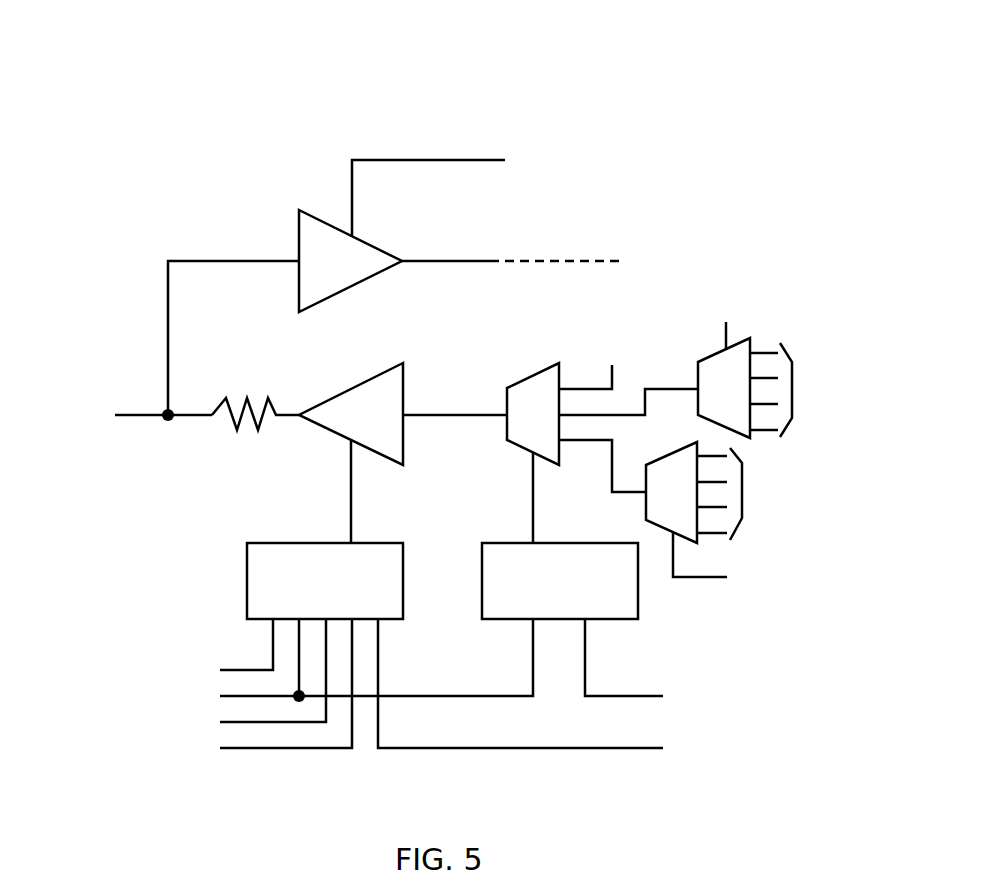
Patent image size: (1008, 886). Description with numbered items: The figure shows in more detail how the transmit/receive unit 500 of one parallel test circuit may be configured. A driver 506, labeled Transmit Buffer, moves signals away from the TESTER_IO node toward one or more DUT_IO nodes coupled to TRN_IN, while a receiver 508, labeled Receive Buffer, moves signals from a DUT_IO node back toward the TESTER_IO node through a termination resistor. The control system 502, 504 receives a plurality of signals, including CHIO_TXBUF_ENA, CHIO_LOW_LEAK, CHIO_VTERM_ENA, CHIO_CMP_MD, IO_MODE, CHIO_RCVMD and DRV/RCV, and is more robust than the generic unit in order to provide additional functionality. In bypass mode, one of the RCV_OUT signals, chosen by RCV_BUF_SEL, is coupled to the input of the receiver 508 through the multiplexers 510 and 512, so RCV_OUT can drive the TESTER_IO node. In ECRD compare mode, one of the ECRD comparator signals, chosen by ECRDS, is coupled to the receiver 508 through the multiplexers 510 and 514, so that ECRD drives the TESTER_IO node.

The transmit/receive unit 500 is at (540, 85).
The control system 502 is at (346, 592).
The control system 504 is at (581, 594).
The driver 506 is at (372, 273).
The receiver 508 is at (372, 427).
The multiplexer 510 is at (530, 377).
The multiplexer 512 is at (712, 421).
The multiplexer 514 is at (649, 521).